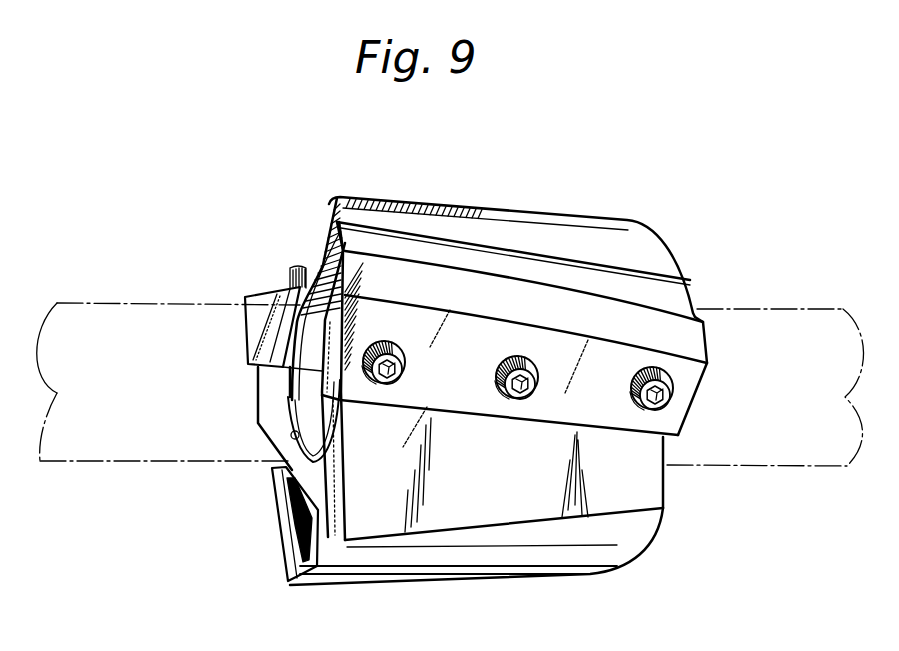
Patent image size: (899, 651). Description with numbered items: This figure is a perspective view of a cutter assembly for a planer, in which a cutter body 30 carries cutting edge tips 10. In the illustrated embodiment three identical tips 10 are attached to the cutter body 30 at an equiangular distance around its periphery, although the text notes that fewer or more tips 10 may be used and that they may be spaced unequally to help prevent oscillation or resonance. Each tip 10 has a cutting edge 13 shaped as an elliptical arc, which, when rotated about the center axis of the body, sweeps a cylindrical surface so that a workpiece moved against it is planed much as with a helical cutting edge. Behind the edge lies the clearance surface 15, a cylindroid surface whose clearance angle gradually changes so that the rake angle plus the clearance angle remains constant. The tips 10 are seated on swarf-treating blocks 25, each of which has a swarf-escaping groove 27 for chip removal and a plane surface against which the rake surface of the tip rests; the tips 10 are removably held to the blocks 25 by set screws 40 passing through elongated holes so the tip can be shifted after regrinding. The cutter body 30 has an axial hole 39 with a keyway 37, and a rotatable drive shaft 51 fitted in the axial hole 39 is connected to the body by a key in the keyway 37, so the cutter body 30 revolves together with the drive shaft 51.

The cutting edge tip 10 is at (533, 333).
The cutting edge 13 is at (492, 272).
The clearance surface 15 is at (443, 275).
The swarf-treating block 25 is at (320, 268).
The swarf-escaping groove 27 is at (328, 255).
The cutter body 30 is at (263, 407).
The keyway 37 is at (292, 380).
The axial hole 39 is at (291, 433).
The set screw 40 is at (390, 345).
The rotatable drive shaft 51 is at (803, 310).